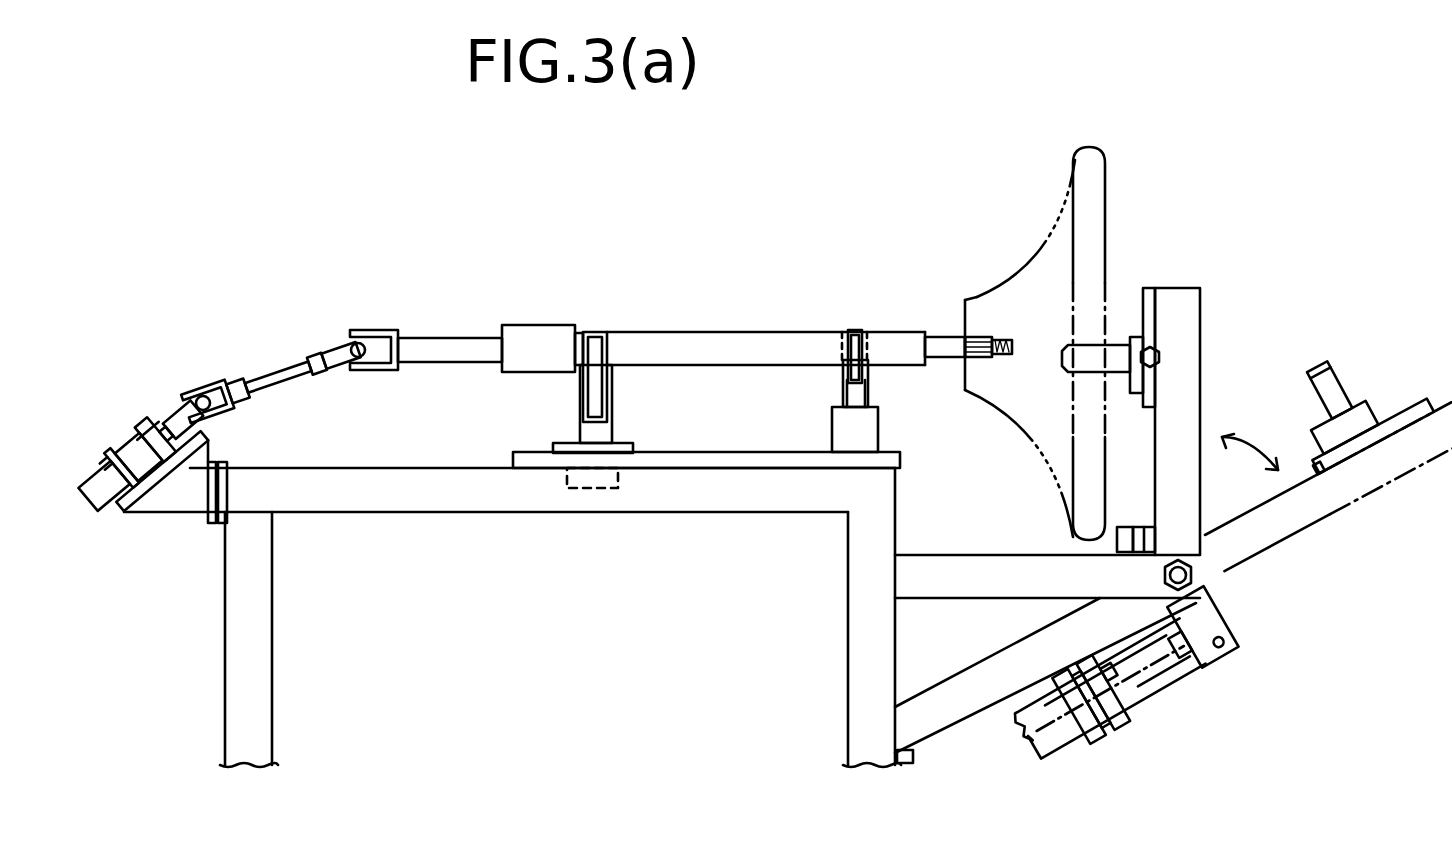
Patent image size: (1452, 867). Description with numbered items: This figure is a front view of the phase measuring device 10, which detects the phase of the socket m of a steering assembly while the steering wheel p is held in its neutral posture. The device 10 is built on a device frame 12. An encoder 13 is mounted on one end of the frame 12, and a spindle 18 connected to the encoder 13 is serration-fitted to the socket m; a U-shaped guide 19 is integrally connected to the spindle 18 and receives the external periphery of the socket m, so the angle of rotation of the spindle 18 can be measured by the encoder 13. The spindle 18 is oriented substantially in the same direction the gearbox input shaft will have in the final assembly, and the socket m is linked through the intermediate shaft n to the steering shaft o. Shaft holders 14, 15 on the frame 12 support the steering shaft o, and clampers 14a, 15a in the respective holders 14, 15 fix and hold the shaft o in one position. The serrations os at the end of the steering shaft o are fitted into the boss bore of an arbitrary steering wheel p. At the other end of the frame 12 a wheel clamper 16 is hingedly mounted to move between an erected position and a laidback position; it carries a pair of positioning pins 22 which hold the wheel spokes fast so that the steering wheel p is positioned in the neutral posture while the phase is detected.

The phase measuring device 10 is at (322, 520).
The device frame 12 is at (480, 498).
The encoder 13 is at (98, 498).
The shaft holder 14 is at (607, 388).
The clamper 14a is at (597, 342).
The shaft holder 15 is at (870, 380).
The clamper 15a is at (853, 343).
The wheel clamper 16 is at (1190, 362).
The spindle 18 is at (123, 460).
The U-shaped guide 19 is at (160, 420).
The positioning pins 22 is at (1115, 365).
The socket m is at (178, 398).
The intermediate shaft n is at (278, 370).
The steering shaft o is at (717, 343).
The serrations os is at (982, 340).
The steering wheel p is at (1097, 238).